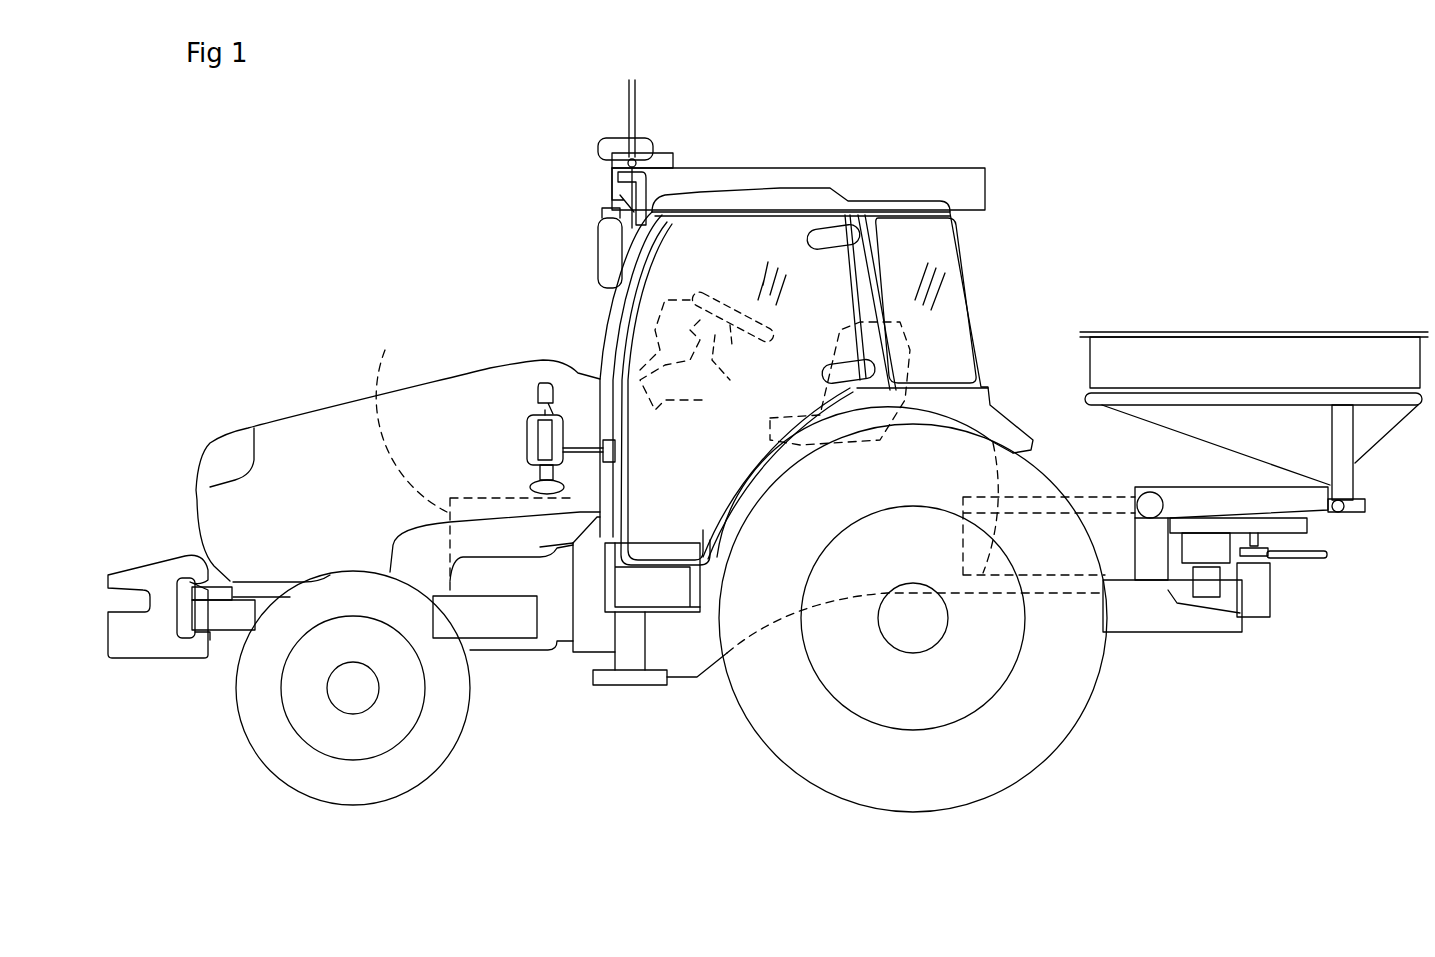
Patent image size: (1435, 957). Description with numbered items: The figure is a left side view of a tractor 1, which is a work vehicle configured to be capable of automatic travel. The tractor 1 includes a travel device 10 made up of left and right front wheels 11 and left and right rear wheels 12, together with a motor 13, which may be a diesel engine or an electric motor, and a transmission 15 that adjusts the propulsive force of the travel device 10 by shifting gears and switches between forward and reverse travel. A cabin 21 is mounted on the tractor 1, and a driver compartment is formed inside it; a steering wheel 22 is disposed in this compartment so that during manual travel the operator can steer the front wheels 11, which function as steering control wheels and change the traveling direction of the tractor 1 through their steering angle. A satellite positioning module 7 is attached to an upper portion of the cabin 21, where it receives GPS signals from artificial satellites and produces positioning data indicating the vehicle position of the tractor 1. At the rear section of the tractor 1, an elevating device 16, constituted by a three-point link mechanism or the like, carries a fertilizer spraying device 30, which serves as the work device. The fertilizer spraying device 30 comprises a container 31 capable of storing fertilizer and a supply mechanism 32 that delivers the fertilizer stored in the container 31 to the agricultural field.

The tractor 1 is at (425, 193).
The satellite positioning module 7 is at (614, 146).
The travel device 10 is at (671, 657).
The front wheels 11 is at (450, 730).
The rear wheels 12 is at (783, 710).
The motor 13 is at (471, 458).
The transmission 15 is at (670, 697).
The elevating device 16 is at (1080, 487).
The cabin 21 is at (1000, 188).
The steering wheel 22 is at (715, 318).
The fertilizer spraying device 30 is at (1232, 443).
The container 31 is at (1097, 360).
The supply mechanism 32 is at (1278, 566).